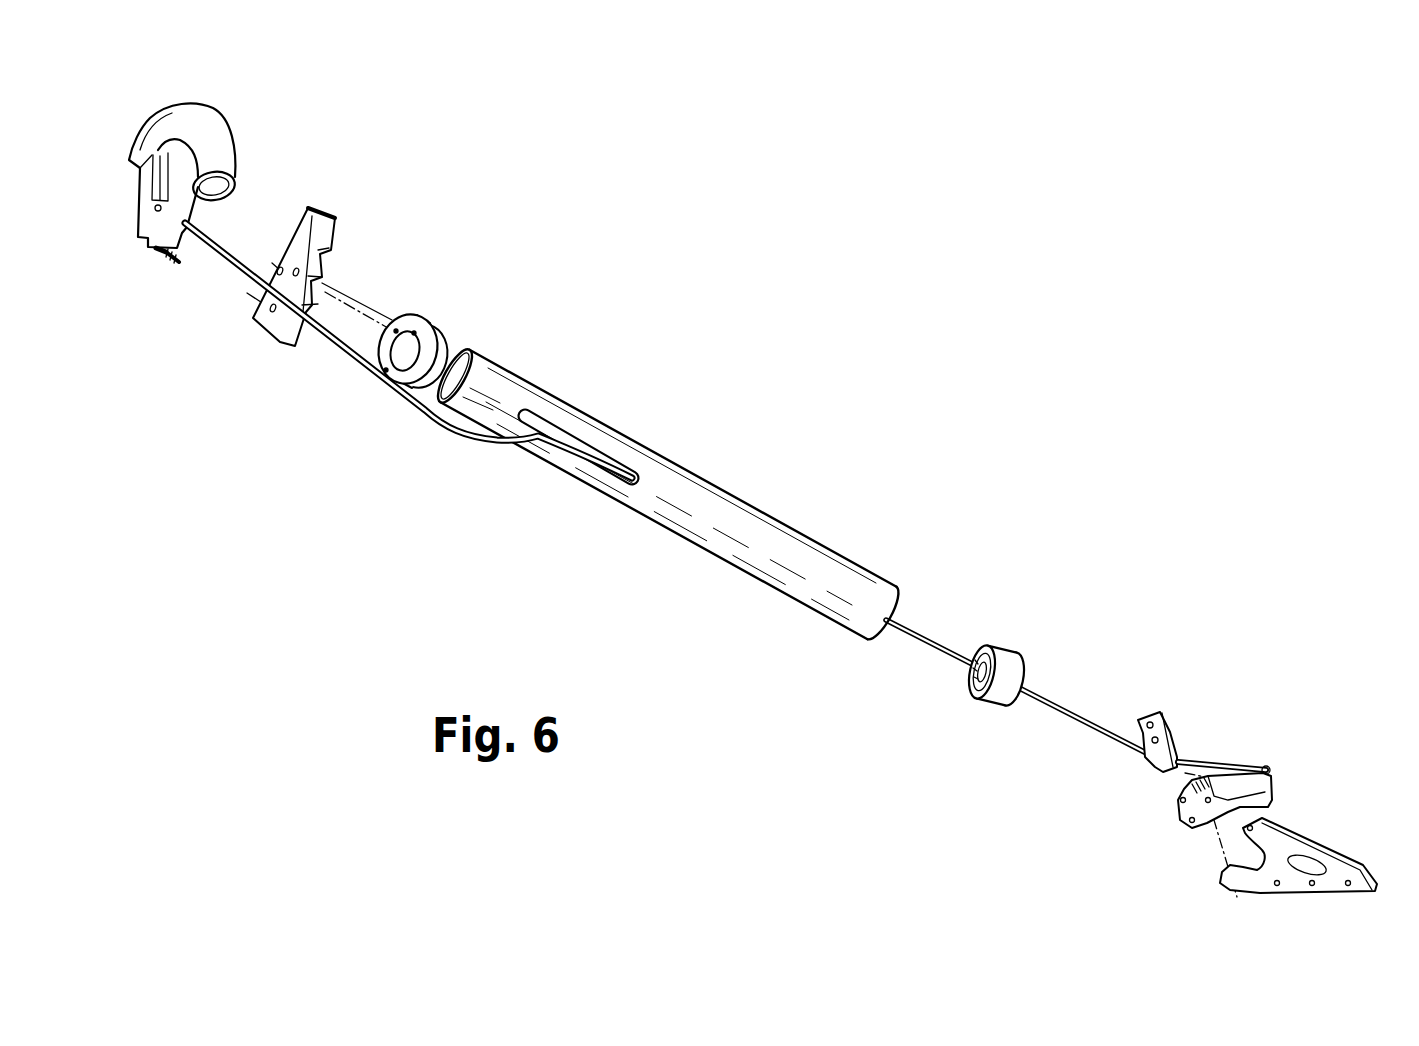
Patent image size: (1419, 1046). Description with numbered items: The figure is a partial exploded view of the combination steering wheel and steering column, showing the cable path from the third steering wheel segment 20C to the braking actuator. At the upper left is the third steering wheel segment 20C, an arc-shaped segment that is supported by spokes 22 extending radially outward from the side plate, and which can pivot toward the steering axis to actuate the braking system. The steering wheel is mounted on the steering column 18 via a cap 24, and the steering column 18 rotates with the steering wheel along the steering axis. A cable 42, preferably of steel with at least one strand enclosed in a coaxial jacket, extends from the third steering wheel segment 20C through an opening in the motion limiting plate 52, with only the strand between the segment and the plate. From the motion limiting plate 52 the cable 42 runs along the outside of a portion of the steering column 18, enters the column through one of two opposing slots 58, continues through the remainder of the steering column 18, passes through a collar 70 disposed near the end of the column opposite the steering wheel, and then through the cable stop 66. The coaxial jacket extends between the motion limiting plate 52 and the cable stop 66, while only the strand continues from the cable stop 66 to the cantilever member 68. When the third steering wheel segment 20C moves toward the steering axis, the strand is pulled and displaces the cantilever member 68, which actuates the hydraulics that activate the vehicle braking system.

The third steering wheel segment 20C is at (227, 127).
The spokes 22 is at (140, 168).
The motion limiting plate 52 is at (330, 214).
The cap 24 is at (412, 313).
The steering column 18 is at (724, 490).
The opposing slots 58 is at (531, 420).
The cable 42 is at (458, 440).
The collar 70 is at (1013, 648).
The cable stop 66 is at (1158, 718).
The cantilever member 68 is at (1180, 798).